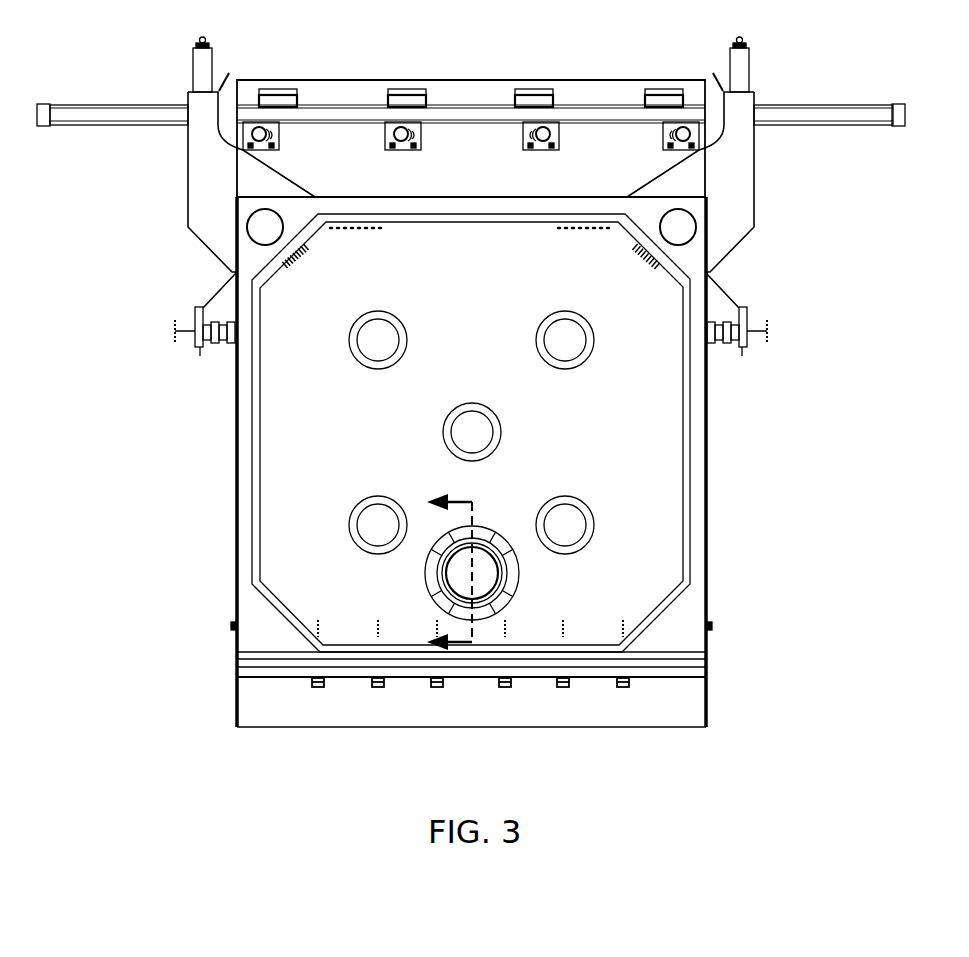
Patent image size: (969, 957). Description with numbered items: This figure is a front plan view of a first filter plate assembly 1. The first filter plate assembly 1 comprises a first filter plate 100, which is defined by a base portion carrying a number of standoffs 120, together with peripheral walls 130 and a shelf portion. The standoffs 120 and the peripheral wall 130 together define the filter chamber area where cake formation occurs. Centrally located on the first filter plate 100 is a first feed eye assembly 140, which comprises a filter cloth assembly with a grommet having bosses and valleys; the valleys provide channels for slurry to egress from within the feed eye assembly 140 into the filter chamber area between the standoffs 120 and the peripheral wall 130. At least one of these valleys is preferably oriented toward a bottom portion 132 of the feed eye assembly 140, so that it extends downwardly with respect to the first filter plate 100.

The first filter plate assembly 1 is at (786, 32).
The first filter plate 100 is at (629, 424).
The standoffs 120 is at (380, 342).
The peripheral walls 130 is at (243, 490).
The bottom portion 132 is at (555, 727).
The first feed eye assembly 140 is at (532, 583).